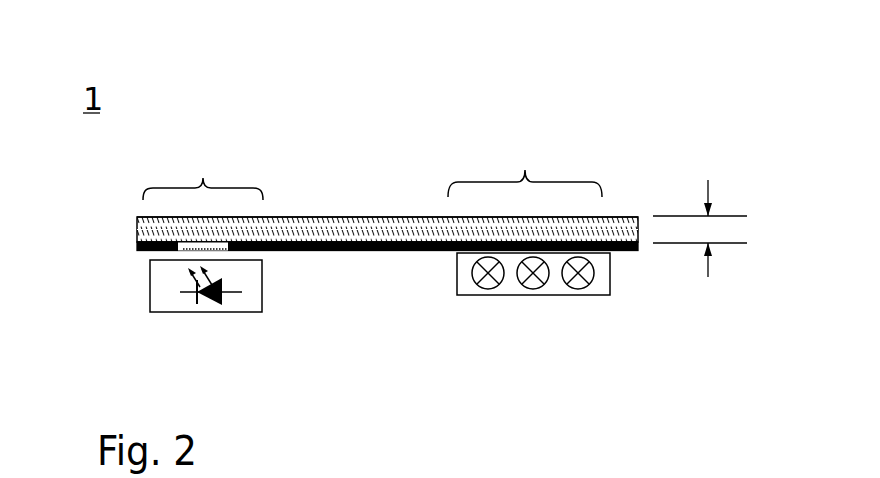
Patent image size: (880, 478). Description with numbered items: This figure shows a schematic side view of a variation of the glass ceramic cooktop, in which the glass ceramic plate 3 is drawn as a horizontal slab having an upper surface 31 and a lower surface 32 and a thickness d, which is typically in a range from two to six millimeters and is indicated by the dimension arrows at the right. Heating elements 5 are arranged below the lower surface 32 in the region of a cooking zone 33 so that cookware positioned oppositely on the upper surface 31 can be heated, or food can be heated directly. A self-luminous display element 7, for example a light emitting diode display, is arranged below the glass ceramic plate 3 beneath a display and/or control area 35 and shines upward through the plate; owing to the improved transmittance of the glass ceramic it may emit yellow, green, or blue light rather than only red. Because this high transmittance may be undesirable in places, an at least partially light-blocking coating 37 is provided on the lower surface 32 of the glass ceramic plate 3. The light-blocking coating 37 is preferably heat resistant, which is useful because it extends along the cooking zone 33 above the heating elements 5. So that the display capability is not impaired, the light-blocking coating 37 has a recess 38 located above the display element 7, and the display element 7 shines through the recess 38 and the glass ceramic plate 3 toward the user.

The glass ceramic plate 3 is at (137, 220).
The heating elements 5 is at (493, 295).
The self-luminous display element 7 is at (262, 302).
The upper surface 31 is at (622, 216).
The lower surface 32 is at (634, 249).
The cooking zone 33 is at (525, 160).
The display and/or control area 35 is at (203, 162).
The light-blocking coating 37 is at (412, 250).
The recess 38 is at (183, 249).
The thickness d is at (717, 228).